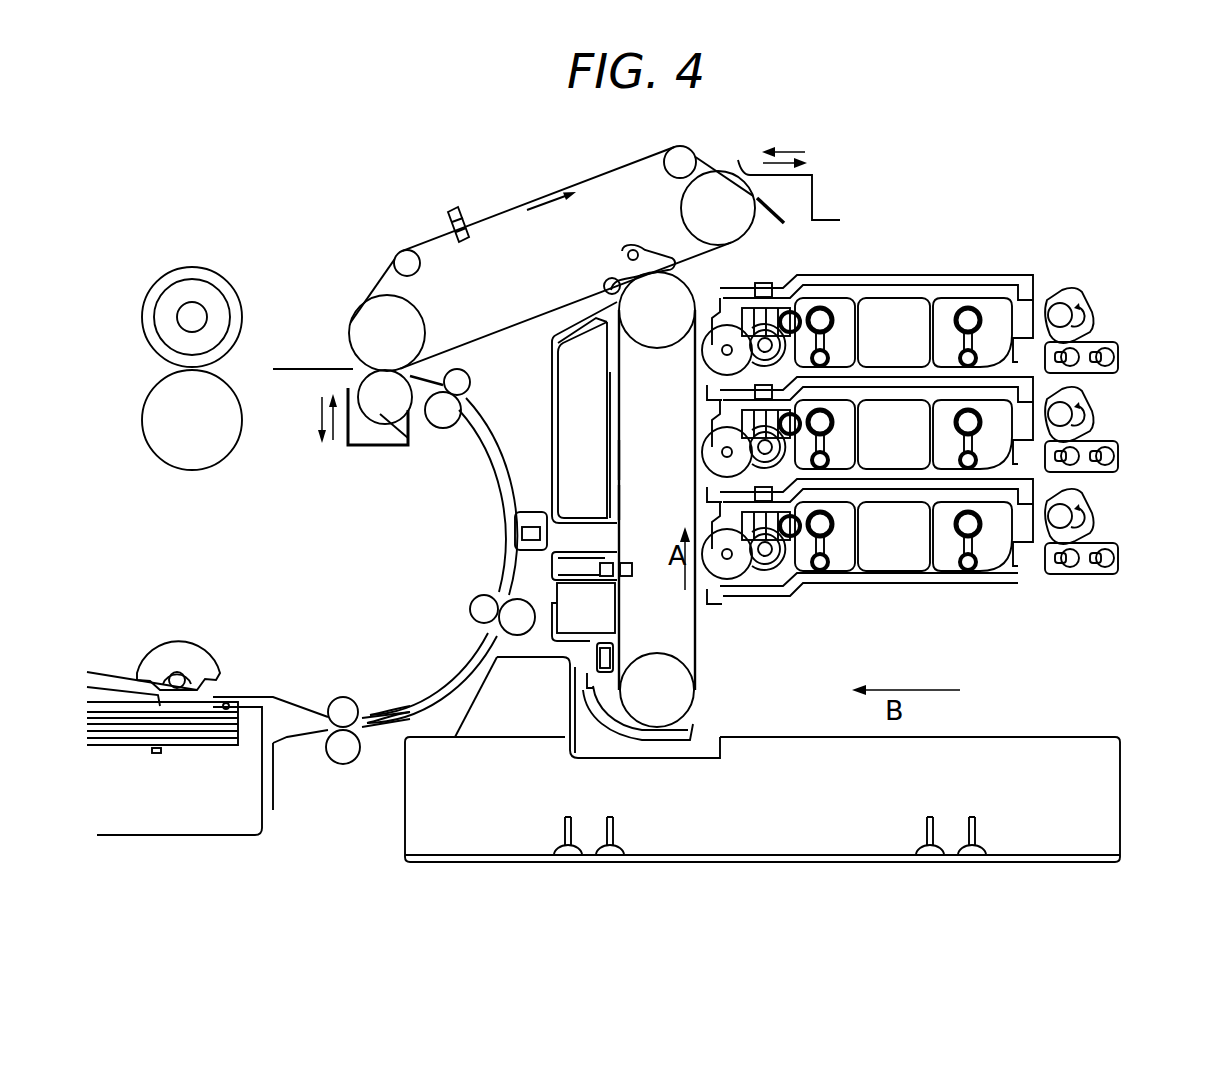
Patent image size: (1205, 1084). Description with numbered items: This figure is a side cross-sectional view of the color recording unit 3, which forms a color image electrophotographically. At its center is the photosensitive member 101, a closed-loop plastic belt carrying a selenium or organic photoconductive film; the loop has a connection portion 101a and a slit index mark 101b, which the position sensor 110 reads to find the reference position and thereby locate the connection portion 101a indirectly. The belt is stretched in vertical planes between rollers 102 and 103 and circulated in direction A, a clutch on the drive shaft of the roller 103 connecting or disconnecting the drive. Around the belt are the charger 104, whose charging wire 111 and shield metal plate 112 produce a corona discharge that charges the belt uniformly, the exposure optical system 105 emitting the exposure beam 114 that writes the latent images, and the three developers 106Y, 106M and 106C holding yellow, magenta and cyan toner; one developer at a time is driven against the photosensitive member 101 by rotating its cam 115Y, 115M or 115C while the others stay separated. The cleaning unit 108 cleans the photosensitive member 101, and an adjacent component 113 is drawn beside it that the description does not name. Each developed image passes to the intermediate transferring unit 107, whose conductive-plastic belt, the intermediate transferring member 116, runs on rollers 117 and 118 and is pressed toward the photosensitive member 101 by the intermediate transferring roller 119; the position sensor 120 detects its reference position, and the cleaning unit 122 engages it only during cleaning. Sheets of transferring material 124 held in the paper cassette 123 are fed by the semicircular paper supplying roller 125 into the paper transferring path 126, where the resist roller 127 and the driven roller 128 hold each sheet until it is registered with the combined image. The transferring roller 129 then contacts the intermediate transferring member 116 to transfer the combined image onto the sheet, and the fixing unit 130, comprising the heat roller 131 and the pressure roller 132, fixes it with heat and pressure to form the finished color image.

The color recording unit 3 is at (1003, 170).
The photosensitive member 101 is at (621, 420).
The connection portion 101a is at (620, 503).
The index mark 101b is at (620, 462).
The roller 102 is at (657, 710).
The roller 103 is at (655, 337).
The charger 104 is at (492, 594).
The exposure optical system 105 is at (677, 862).
The developer 106Y is at (921, 343).
The developer 106M is at (921, 445).
The developer 106C is at (921, 547).
The intermediate transferring unit 107 is at (527, 177).
The cleaning unit 108 is at (617, 348).
The position sensor 110 is at (630, 563).
The charging wire 111 is at (582, 612).
The shield metal plate 112 is at (621, 625).
The cleaning blade holder 113 is at (621, 597).
The exposure beam 114 is at (592, 726).
The cam 115Y is at (1068, 290).
The cam 115M is at (1098, 410).
The cam 115C is at (1098, 515).
The intermediate transferring member 116 is at (720, 247).
The roller 117 is at (688, 210).
The roller 118 is at (418, 318).
The intermediate transferring roller 119 is at (608, 266).
The position sensor 120 is at (468, 240).
The cleaning unit 122 is at (812, 176).
The transferring material cassette 123 is at (185, 823).
The transferring material 124 is at (212, 702).
The paper supplying roller 125 is at (197, 638).
The paper transferring path 126 is at (432, 695).
The resist roller 127 is at (443, 430).
The driven roller 128 is at (466, 378).
The transferring roller 129 is at (374, 418).
The fixing unit 130 is at (191, 268).
The heat roller 131 is at (227, 286).
The pressure roller 132 is at (210, 456).